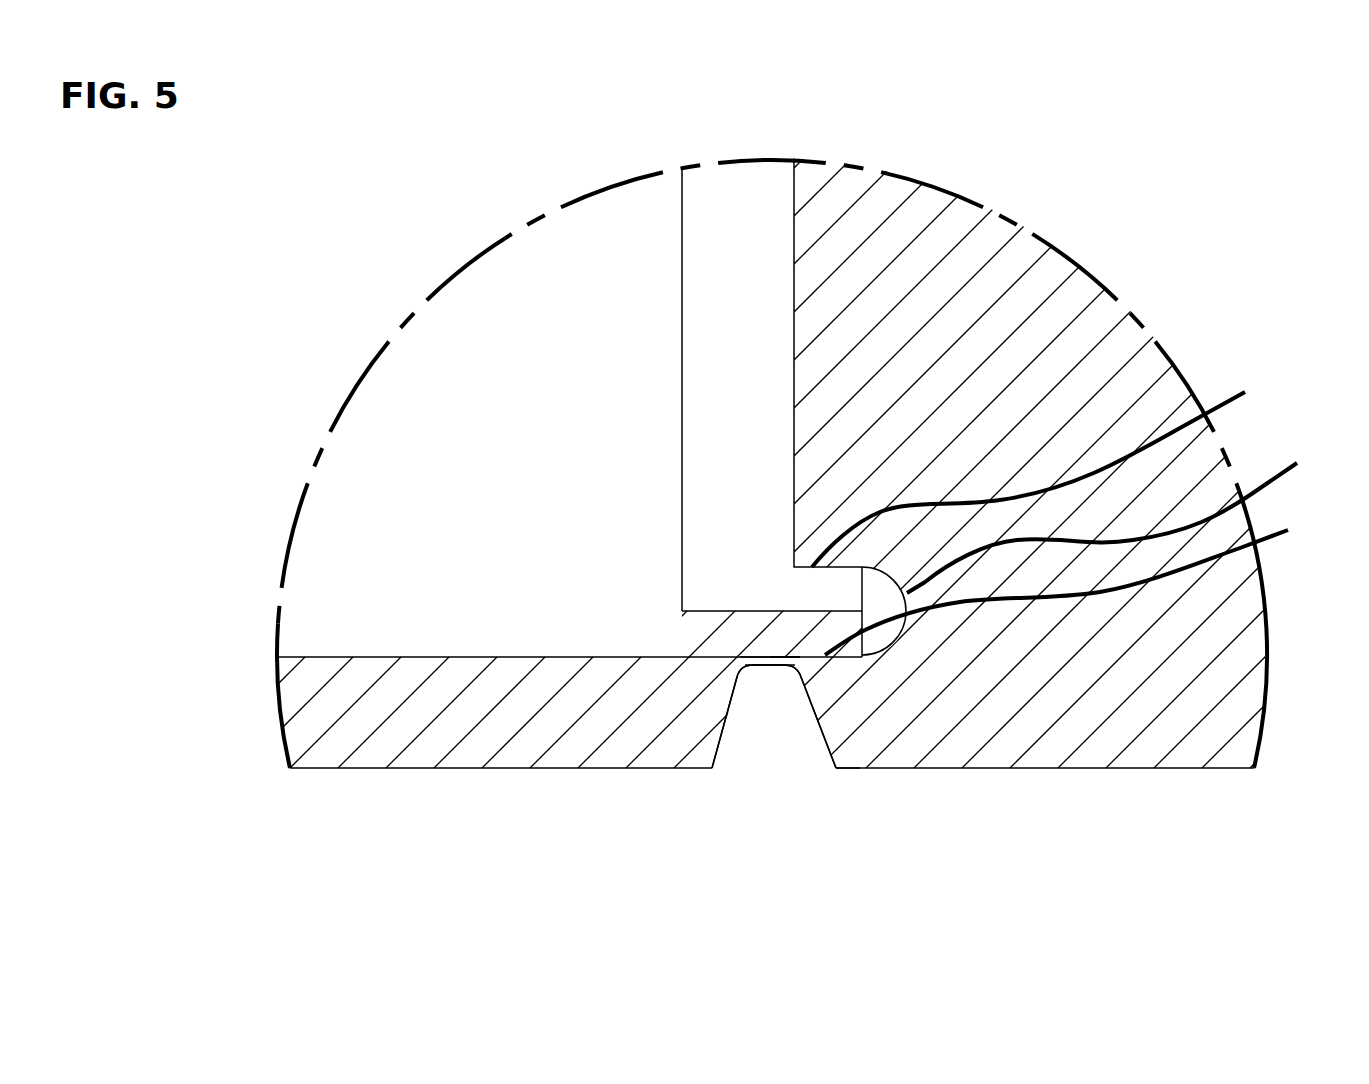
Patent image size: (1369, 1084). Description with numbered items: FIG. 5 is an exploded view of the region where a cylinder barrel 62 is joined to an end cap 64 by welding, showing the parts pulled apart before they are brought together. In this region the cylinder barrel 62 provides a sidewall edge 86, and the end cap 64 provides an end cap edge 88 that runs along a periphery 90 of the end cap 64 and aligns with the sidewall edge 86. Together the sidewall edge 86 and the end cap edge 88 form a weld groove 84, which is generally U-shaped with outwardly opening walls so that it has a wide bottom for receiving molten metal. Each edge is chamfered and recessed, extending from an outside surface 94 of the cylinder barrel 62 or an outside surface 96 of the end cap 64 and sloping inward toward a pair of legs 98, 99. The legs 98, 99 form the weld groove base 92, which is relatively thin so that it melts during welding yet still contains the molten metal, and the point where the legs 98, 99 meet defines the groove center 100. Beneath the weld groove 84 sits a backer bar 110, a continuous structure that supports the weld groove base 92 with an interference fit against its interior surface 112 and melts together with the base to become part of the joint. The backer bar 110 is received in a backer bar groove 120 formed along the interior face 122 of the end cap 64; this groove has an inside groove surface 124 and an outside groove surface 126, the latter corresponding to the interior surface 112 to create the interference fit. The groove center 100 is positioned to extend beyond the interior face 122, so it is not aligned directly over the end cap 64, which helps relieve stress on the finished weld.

The cylinder barrel 62 is at (357, 728).
The end cap 64 is at (1143, 753).
The weld groove 84 is at (733, 800).
The sidewall edge 86 is at (725, 718).
The end cap edge 88 is at (827, 745).
The periphery 90 is at (835, 768).
The weld groove base 92 is at (763, 666).
The outside surface 94 is at (687, 768).
The outside surface 96 is at (1000, 768).
The leg 98 is at (752, 662).
The leg 99 is at (787, 663).
The groove center 100 is at (772, 660).
The backer bar 110 is at (750, 620).
The interior surface 112 is at (787, 658).
The backer bar groove 120 is at (1123, 521).
The interior face 122 is at (792, 337).
The inside groove surface 124 is at (1052, 472).
The outside groove surface 126 is at (1079, 586).